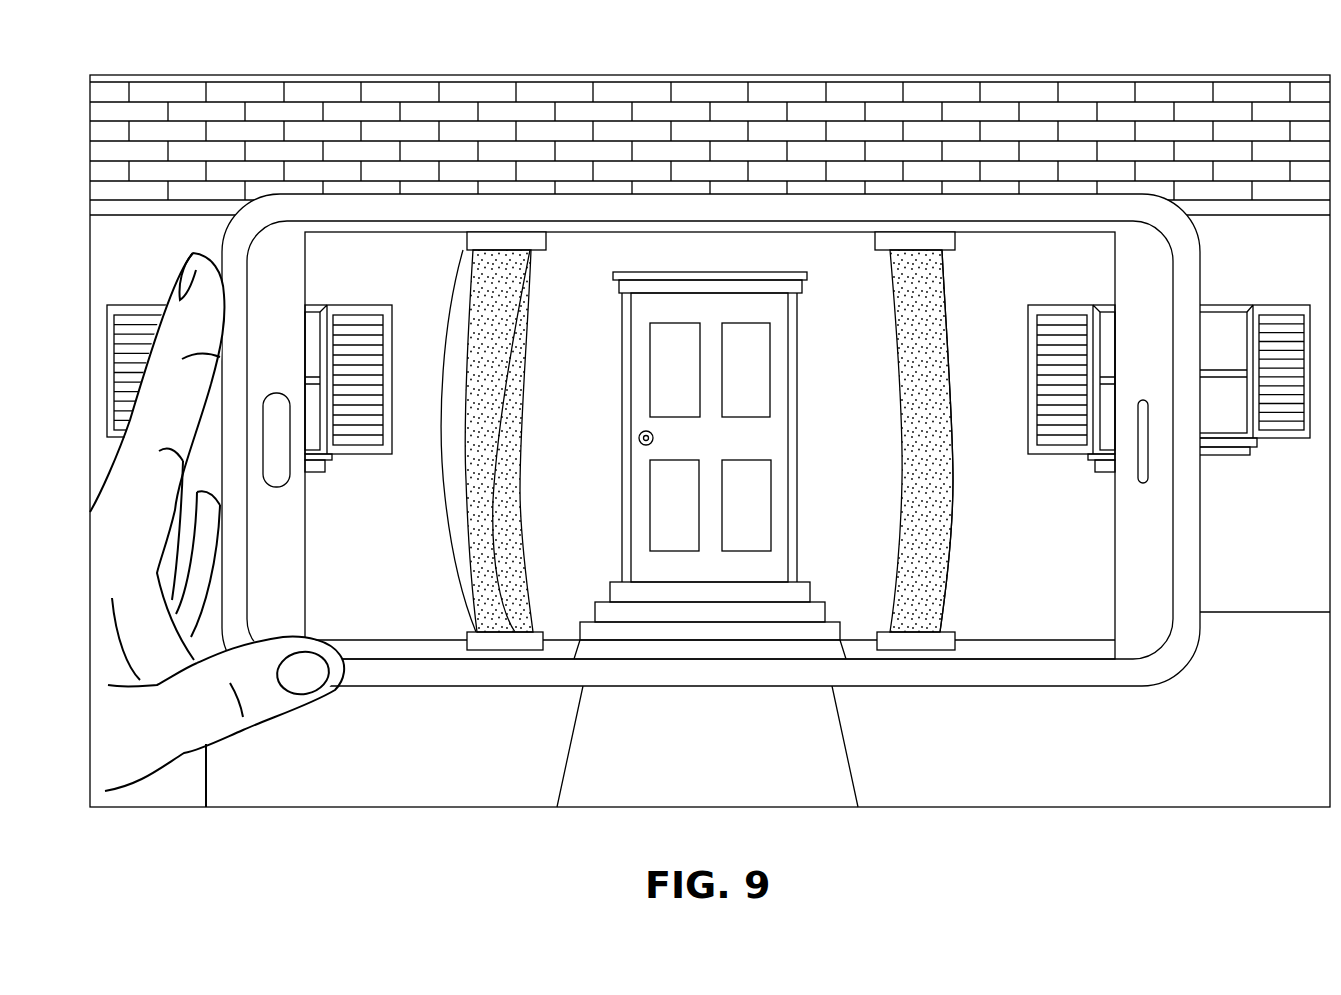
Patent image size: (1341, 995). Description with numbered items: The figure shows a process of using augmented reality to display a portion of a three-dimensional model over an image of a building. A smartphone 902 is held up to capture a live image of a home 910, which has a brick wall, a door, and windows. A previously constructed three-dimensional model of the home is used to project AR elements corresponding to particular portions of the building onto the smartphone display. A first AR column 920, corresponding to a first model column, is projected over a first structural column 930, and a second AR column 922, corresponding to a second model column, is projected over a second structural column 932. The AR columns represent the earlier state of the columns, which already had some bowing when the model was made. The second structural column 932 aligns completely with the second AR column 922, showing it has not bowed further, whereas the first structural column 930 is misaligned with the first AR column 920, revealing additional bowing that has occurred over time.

The smartphone 902 is at (800, 207).
The home 910 is at (962, 130).
The first AR column 920 is at (508, 410).
The second AR column 922 is at (920, 398).
The first structural column 930 is at (445, 497).
The second structural column 932 is at (952, 482).